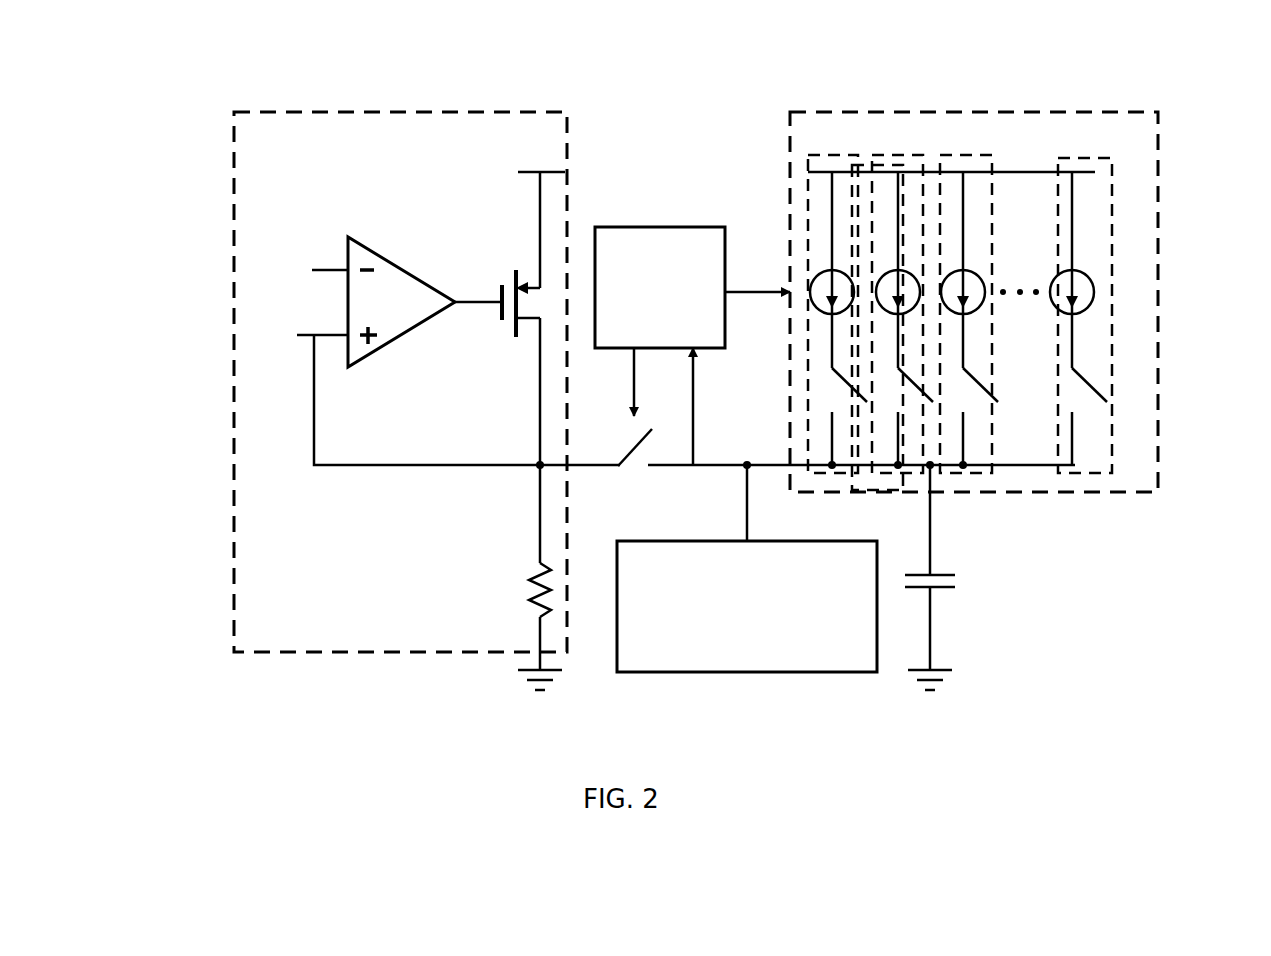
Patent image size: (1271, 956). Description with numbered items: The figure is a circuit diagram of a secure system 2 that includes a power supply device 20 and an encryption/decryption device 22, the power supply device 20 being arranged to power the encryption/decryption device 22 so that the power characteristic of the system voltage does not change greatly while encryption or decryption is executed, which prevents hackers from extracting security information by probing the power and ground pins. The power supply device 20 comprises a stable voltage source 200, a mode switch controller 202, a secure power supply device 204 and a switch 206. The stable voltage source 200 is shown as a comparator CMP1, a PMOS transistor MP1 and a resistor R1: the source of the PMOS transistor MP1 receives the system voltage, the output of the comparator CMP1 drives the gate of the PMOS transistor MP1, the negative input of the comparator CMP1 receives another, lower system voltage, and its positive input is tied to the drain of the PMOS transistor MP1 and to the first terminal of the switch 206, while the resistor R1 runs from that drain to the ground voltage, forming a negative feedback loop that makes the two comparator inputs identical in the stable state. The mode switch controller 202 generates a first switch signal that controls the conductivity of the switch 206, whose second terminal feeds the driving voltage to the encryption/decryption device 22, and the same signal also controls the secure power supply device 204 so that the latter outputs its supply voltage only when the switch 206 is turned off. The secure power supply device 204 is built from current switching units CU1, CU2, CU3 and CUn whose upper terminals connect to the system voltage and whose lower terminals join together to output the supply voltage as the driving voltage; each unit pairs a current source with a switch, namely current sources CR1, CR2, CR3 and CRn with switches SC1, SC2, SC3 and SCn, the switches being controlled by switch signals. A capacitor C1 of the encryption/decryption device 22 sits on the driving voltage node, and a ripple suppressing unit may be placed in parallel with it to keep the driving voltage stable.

The secure system 2 is at (99, 96).
The power supply device 20 is at (153, 135).
The stable voltage source 200 is at (481, 111).
The mode switch controller 202 is at (673, 225).
The secure power supply device 204 is at (1028, 111).
The switch 206 is at (642, 440).
The encryption/decryption device 22 is at (642, 540).
The comparator CMP1 is at (404, 266).
The PMOS transistor MP1 is at (512, 325).
The resistor R1 is at (536, 600).
The capacitor C1 is at (943, 573).
The current switching unit CU1 is at (806, 156).
The current switching unit CU2 is at (875, 156).
The current switching unit CU3 is at (978, 156).
The current switching unit CUn is at (1082, 158).
The current source CR1 is at (812, 303).
The current source CR2 is at (885, 278).
The current source CR3 is at (972, 278).
The current source CRn is at (1060, 303).
The switch SC1 is at (840, 378).
The switch SC2 is at (920, 388).
The switch SC3 is at (982, 390).
The switch SCn is at (1083, 375).